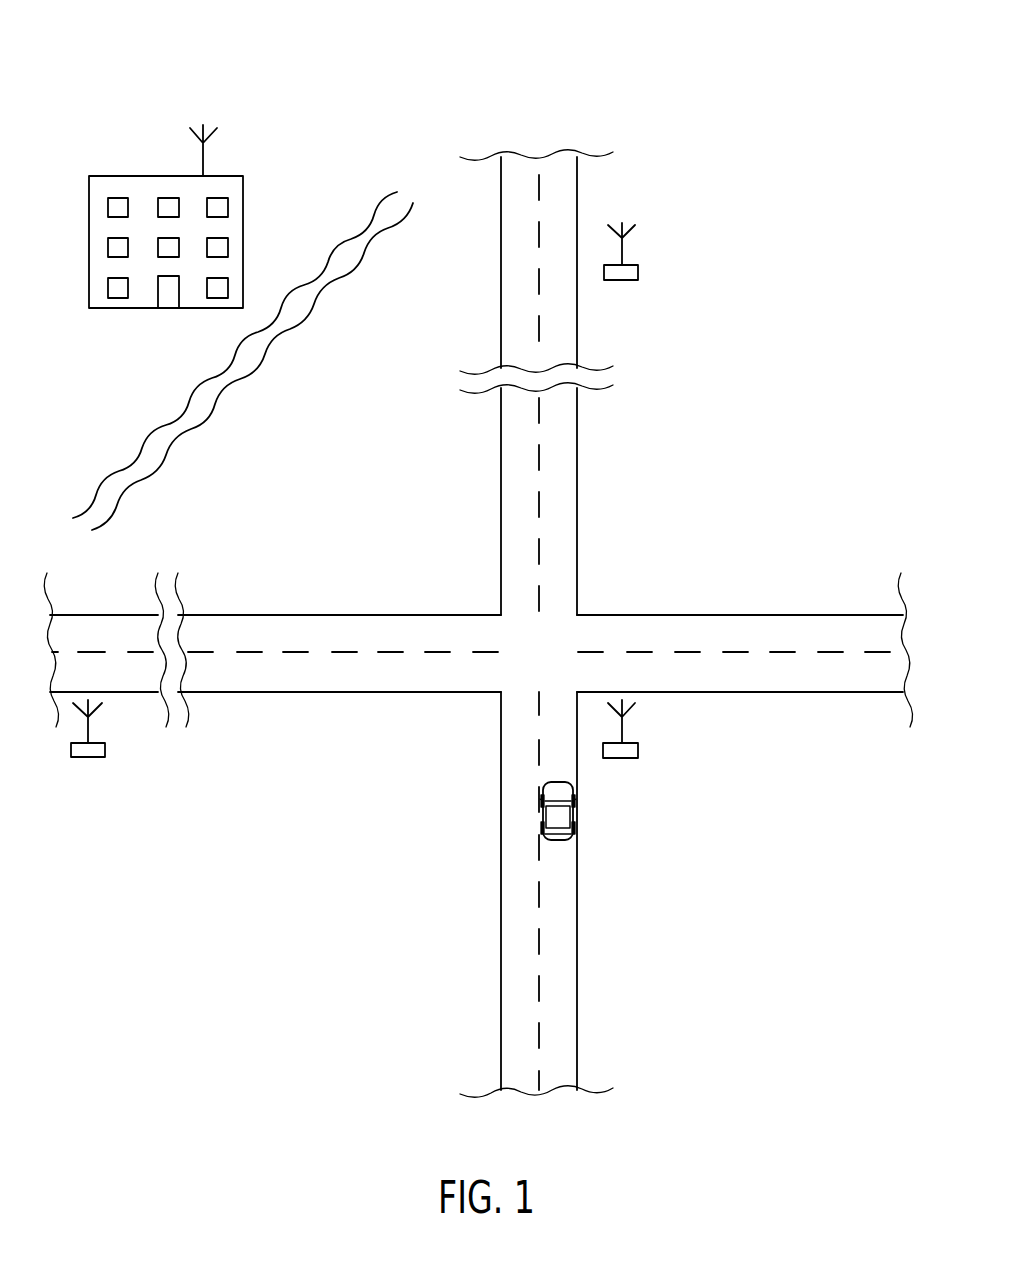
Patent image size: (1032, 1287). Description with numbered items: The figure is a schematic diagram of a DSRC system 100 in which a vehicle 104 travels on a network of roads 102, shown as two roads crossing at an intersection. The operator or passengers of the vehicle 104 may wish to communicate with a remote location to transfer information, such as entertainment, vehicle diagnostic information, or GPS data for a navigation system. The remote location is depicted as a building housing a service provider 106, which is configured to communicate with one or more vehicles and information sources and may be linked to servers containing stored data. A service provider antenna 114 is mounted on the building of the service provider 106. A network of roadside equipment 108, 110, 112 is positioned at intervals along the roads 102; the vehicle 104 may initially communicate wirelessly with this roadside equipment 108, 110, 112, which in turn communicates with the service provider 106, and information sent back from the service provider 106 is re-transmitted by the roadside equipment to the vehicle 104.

The DSRC system 100 is at (755, 119).
The network of roads 102 is at (570, 485).
The vehicle 104 is at (568, 837).
The service provider 106 is at (238, 228).
The roadside equipment 108 is at (622, 727).
The roadside equipment 110 is at (622, 250).
The roadside equipment 112 is at (88, 722).
The service provider antenna 114 is at (203, 158).